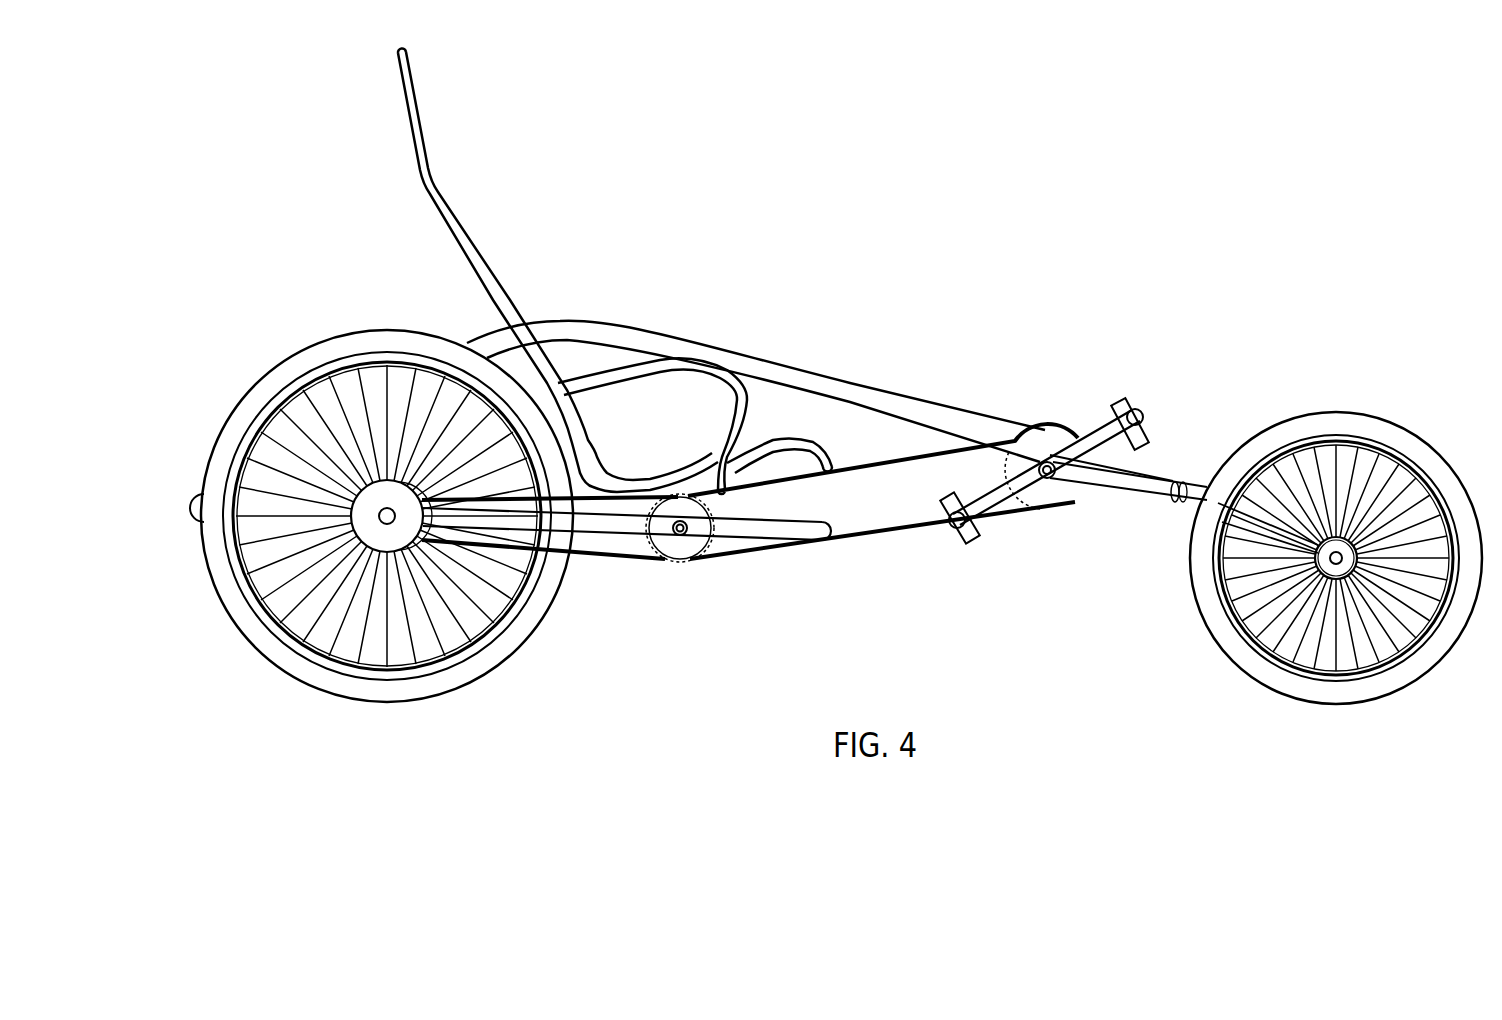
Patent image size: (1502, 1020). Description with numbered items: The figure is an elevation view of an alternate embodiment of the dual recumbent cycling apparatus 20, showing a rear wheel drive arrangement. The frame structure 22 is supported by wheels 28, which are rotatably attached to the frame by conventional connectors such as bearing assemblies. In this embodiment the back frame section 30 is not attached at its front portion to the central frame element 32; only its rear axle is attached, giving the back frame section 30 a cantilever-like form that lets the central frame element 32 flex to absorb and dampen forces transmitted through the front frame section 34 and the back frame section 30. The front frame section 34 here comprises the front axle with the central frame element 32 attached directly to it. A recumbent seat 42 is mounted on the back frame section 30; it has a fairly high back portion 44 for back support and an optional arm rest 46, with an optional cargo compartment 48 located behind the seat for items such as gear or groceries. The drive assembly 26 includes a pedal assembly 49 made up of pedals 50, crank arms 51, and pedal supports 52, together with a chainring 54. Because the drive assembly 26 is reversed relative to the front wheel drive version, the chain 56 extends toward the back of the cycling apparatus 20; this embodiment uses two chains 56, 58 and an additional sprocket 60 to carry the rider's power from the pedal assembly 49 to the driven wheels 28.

The cycling apparatus 20 is at (1078, 169).
The frame structure 22 is at (909, 554).
The drive assembly 26 is at (1078, 388).
The wheels 28 is at (338, 340).
The back frame section 30 is at (775, 536).
The central frame element 32 is at (896, 403).
The front frame section 34 is at (1321, 524).
The seats 42 is at (522, 171).
The back portion 44 is at (397, 107).
The arm rests 46 is at (697, 357).
The cargo compartment 48 is at (192, 494).
The pedal assembly 49 is at (1150, 438).
The pedals 50 is at (1143, 403).
The crank arms 51 is at (973, 513).
The pedal supports 52 is at (1123, 488).
The chainring 54 is at (1045, 498).
The chain 56 is at (850, 548).
The chain 58 is at (603, 558).
The additional sprocket 60 is at (670, 563).